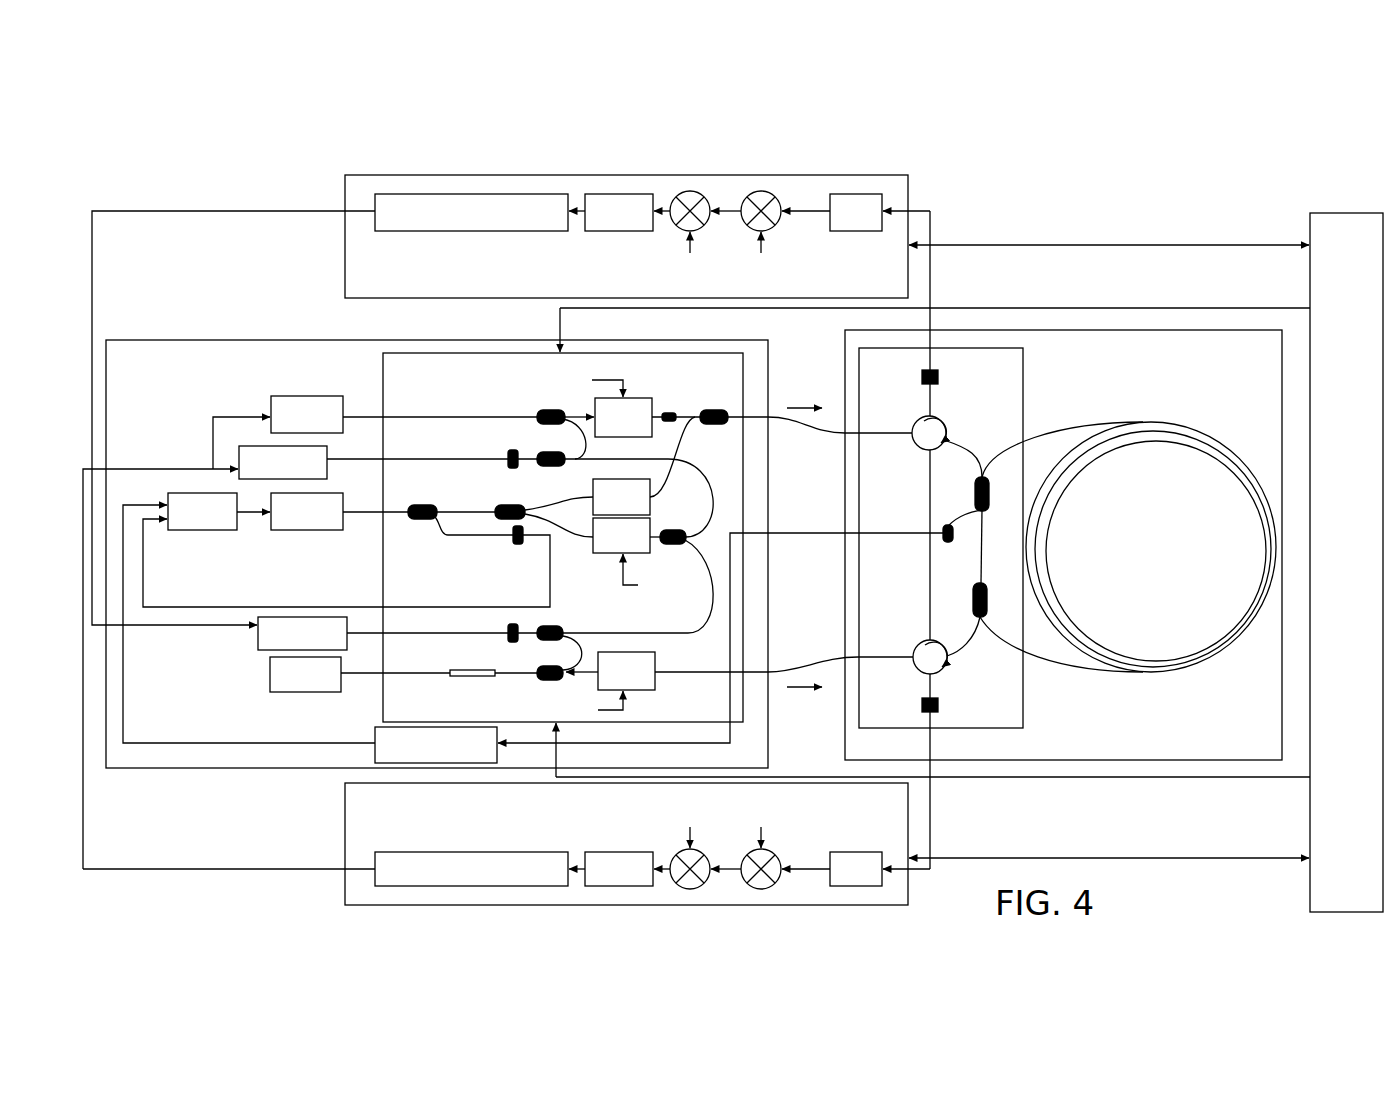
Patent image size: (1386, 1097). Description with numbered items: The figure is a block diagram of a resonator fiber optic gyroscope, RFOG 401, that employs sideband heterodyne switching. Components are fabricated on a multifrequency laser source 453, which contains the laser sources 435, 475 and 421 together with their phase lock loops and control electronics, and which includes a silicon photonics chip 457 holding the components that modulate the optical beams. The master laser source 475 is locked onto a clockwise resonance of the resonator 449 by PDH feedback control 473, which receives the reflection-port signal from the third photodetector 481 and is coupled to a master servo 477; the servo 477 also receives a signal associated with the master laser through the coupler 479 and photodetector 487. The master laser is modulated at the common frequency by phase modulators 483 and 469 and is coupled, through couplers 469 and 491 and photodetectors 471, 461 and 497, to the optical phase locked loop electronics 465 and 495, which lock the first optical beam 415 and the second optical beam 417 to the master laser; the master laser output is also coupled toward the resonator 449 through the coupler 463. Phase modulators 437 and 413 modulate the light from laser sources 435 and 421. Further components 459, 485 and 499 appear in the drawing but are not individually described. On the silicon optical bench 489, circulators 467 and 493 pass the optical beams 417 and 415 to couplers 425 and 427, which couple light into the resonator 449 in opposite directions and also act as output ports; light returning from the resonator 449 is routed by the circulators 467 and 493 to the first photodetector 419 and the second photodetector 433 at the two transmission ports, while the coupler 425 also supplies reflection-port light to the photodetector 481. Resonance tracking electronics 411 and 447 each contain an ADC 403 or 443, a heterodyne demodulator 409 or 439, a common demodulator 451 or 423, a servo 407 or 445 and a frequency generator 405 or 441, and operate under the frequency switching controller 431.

The RFOG 401 is at (156, 96).
The ADC 403 is at (856, 212).
The frequency generator 405 is at (471, 212).
The servo 407 is at (619, 212).
The heterodyne demodulator 409 is at (762, 190).
The resonance tracking electronics 411 is at (443, 175).
The phase modulator 413 is at (655, 690).
The first optical beam 415 is at (805, 698).
The second optical beam 417 is at (807, 404).
The first photodetector 419 is at (940, 377).
The laser source 421 is at (305, 674).
The common demodulator 423 is at (690, 890).
The coupler 425 is at (972, 493).
The coupler 427 is at (972, 598).
The frequency switching controller 431 is at (1346, 562).
The second photodetector 433 is at (940, 705).
The laser source 435 is at (307, 414).
The phase modulator 437 is at (636, 397).
The heterodyne demodulator 439 is at (761, 890).
The frequency generator 441 is at (471, 869).
The ADC 443 is at (856, 869).
The servo 445 is at (619, 869).
The resonance tracking electronics 447 is at (528, 907).
The resonator 449 is at (1135, 422).
The common demodulator 451 is at (690, 190).
The multifrequency laser source 453 is at (199, 340).
The silicon photonics chip 457 is at (563, 537).
The optical coupler 459 is at (537, 413).
The photodetector 461 is at (537, 455).
The coupler 463 is at (716, 410).
The optical phase locked loop electronics 465 is at (283, 462).
The circulator 467 is at (946, 432).
The coupler 469 is at (593, 486).
The photodetector 471 is at (506, 466).
The PDH feedback control 473 is at (436, 745).
The master laser source 475 is at (307, 511).
The master servo 477 is at (202, 511).
The coupler 479 is at (421, 522).
The third photodetector 481 is at (944, 538).
The phase modulator 483 is at (607, 553).
The optical coupler 485 is at (676, 546).
The photodetector 487 is at (518, 547).
The silicon optical bench 489 is at (941, 538).
The coupler 491 is at (565, 630).
The circulator 493 is at (980, 663).
The optical phase locked loop electronics 495 is at (302, 633).
The photodetector 497 is at (505, 637).
The optical coupler 499 is at (533, 683).